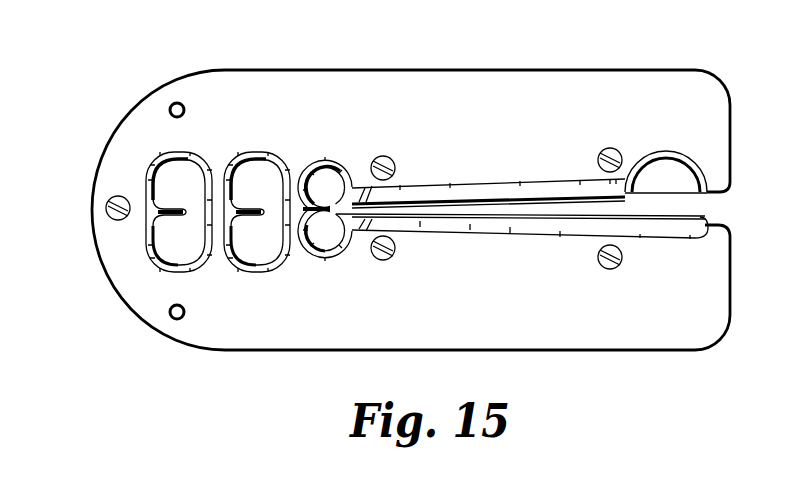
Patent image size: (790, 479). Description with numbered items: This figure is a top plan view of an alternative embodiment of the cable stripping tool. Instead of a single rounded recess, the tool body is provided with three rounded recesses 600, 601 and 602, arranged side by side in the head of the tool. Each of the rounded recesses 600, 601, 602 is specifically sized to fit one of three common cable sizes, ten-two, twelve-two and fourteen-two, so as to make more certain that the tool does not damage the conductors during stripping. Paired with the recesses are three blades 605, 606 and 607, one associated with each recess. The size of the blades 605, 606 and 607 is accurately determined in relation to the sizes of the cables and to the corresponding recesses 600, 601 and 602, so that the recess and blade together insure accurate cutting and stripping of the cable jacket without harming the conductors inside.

The rounded recess 600 is at (181, 173).
The rounded recess 601 is at (262, 176).
The rounded recess 602 is at (325, 182).
The blade 605 is at (183, 218).
The blade 606 is at (255, 230).
The blade 607 is at (328, 213).